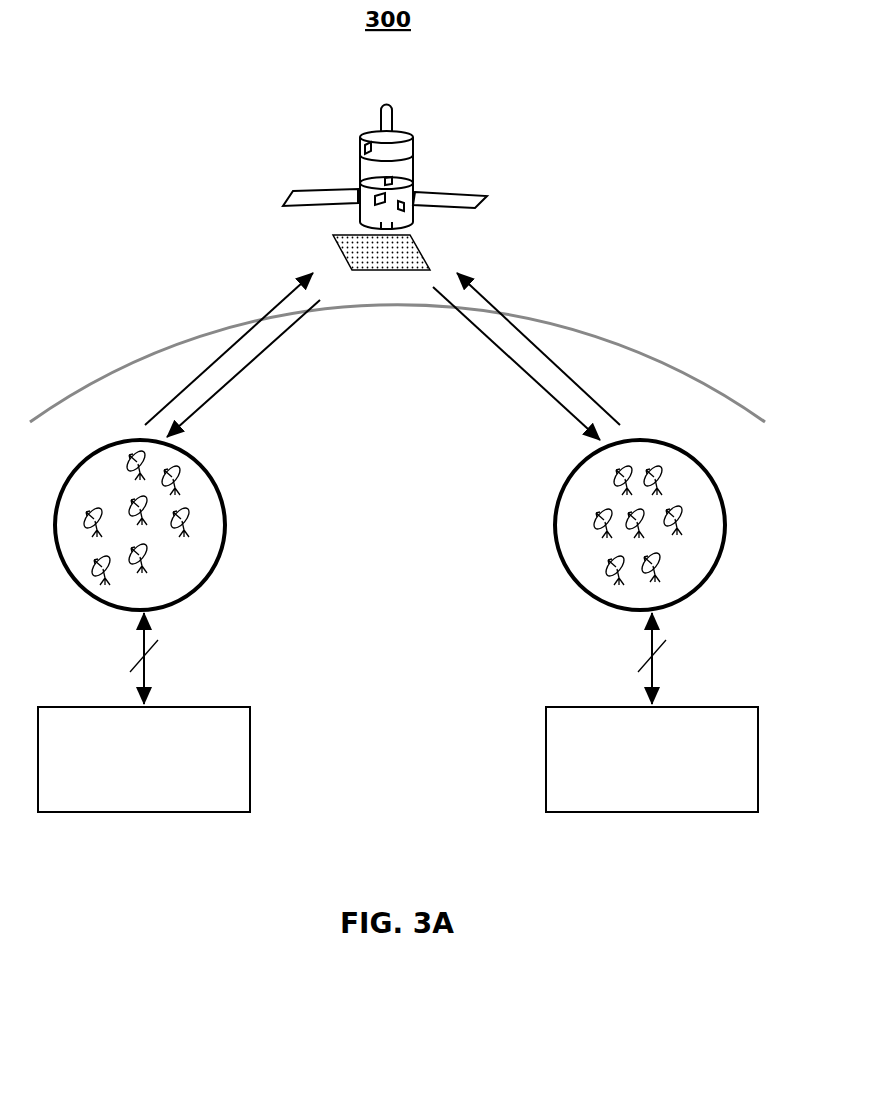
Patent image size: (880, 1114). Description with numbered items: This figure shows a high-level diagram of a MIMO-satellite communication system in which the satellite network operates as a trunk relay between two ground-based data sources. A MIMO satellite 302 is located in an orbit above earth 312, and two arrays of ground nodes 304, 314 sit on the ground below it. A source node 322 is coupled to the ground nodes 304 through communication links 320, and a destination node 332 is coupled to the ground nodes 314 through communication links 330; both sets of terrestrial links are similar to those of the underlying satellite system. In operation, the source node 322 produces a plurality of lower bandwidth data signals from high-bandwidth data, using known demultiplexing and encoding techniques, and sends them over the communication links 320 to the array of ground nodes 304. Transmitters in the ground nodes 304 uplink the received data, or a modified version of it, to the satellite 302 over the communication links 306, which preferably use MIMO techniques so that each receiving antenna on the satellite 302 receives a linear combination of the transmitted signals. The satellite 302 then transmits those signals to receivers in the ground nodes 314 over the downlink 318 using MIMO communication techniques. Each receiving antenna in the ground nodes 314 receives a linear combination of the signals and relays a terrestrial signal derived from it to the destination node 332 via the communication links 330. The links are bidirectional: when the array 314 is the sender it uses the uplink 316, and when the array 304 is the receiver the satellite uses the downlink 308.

The MIMO satellite 302 is at (415, 152).
The ground nodes 304 is at (227, 526).
The communication links 306 is at (280, 298).
The downlink 308 is at (250, 370).
The earth 312 is at (653, 356).
The ground nodes 314 is at (727, 544).
The communication links 316 is at (493, 304).
The downlink 318 is at (503, 353).
The communication links 320 is at (145, 668).
The source node 322 is at (250, 752).
The communication links 330 is at (653, 668).
The destination node 332 is at (758, 752).